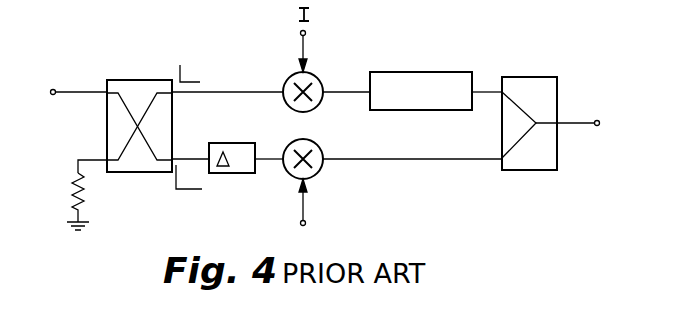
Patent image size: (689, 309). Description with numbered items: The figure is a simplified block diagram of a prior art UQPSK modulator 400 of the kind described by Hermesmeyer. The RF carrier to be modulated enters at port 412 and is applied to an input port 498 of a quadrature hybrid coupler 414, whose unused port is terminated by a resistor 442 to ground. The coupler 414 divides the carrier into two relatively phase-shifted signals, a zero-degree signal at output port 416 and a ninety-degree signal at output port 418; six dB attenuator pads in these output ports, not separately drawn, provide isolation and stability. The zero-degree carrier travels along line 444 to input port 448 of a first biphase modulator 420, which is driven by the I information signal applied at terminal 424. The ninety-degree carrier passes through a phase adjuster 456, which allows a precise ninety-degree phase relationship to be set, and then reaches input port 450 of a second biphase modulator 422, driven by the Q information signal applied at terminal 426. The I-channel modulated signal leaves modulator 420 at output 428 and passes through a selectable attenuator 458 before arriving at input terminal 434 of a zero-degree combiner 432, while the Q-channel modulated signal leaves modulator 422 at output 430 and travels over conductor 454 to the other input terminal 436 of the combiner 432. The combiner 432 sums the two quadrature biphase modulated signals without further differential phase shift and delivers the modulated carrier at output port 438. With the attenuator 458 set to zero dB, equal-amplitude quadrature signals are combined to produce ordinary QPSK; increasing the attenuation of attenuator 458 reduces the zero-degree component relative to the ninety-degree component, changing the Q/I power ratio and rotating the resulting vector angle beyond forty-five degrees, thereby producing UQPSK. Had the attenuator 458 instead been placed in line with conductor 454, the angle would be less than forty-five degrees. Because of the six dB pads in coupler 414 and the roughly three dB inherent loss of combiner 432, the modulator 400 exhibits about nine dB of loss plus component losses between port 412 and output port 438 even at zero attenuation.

The UQPSK modulator 400 is at (436, 243).
The port 412 is at (50, 96).
The input port 498 is at (105, 97).
The quadrature hybrid coupler 414 is at (140, 172).
The termination resistor 442 is at (74, 184).
The output port 416 is at (173, 95).
The output port 418 is at (174, 159).
The in-phase carrier line 444 is at (246, 92).
The input port 448 is at (283, 97).
The biphase modulator 420 is at (320, 78).
The I signal input terminal 424 is at (300, 33).
The I mixer output 428 is at (323, 99).
The selectable attenuator 458 is at (423, 72).
The input terminal 434 is at (500, 94).
The combiner 432 is at (534, 77).
The output port 438 is at (598, 127).
The phase adjuster 456 is at (237, 174).
The input port 450 is at (283, 163).
The biphase modulator 422 is at (320, 176).
The Q mixer output 430 is at (325, 150).
The Q signal input terminal 426 is at (306, 223).
The conductor 454 is at (422, 161).
The input terminal 436 is at (499, 160).